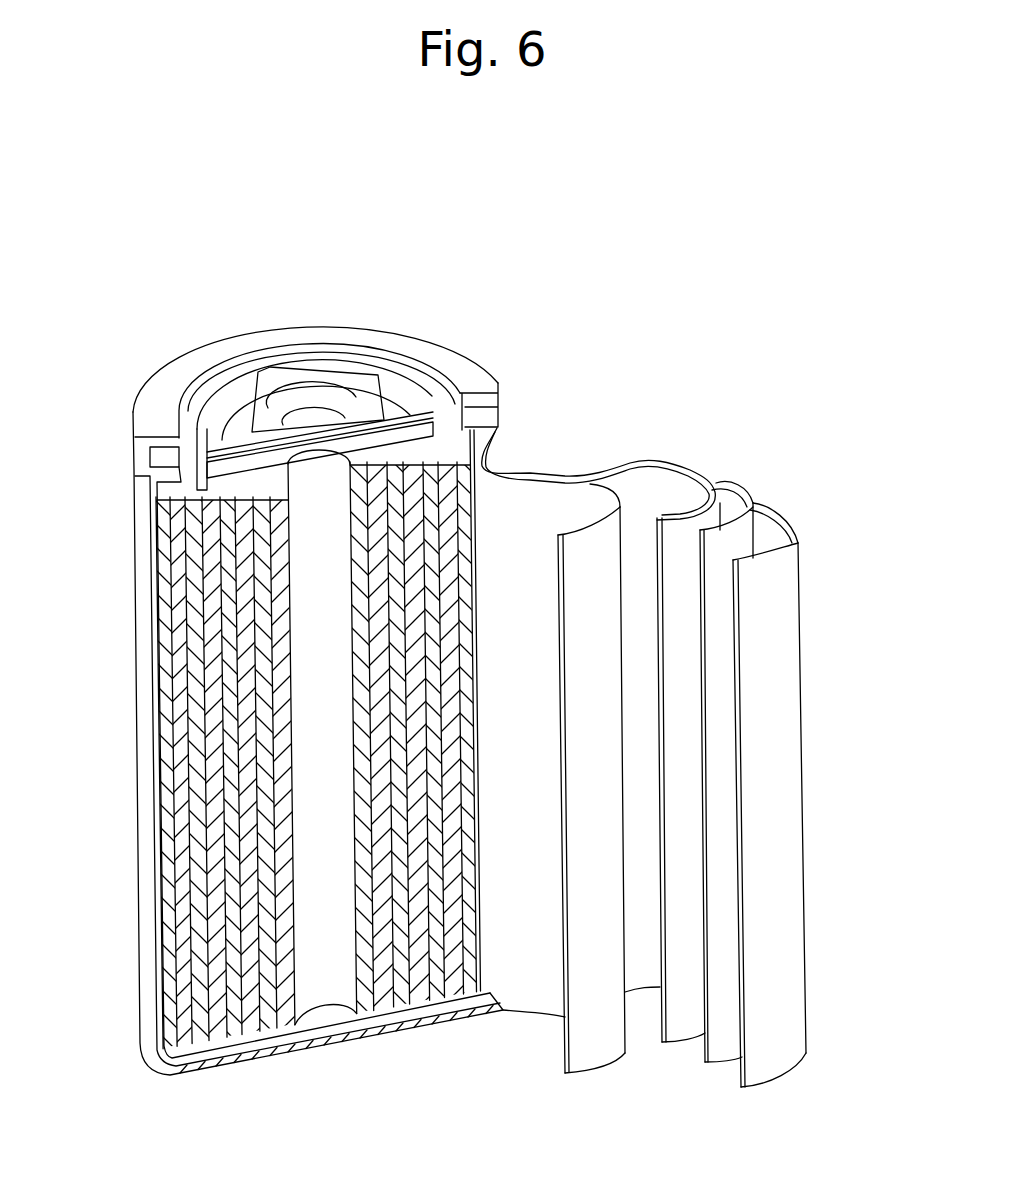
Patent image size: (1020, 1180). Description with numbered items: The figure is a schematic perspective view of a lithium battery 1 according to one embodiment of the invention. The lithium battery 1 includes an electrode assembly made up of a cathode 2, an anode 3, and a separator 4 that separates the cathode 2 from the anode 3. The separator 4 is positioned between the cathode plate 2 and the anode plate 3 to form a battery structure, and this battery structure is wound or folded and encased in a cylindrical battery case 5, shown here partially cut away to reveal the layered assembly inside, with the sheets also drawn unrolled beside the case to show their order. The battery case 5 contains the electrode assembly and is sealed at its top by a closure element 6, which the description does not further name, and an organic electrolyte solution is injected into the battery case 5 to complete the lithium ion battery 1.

The lithium battery 1 is at (691, 745).
The cathode 2 is at (787, 643).
The anode 3 is at (677, 530).
The separator 4 is at (743, 532).
The battery case 5 is at (140, 985).
The sealing cap 6 is at (333, 367).